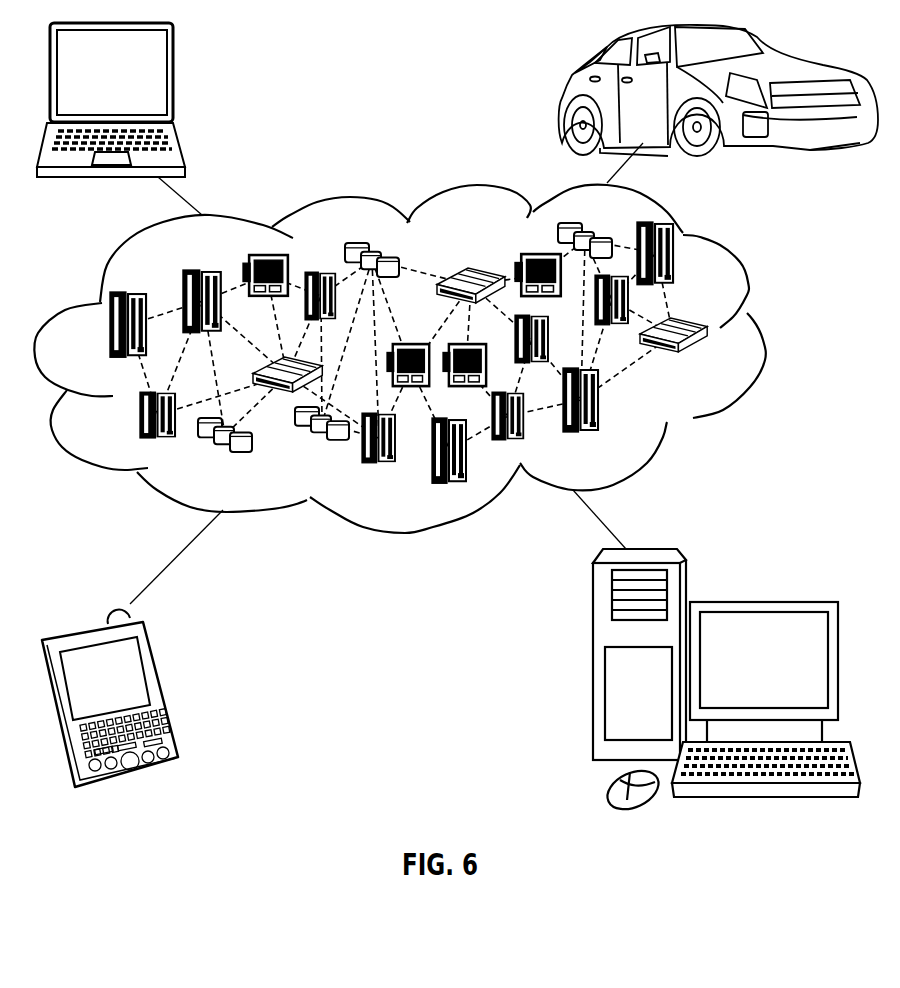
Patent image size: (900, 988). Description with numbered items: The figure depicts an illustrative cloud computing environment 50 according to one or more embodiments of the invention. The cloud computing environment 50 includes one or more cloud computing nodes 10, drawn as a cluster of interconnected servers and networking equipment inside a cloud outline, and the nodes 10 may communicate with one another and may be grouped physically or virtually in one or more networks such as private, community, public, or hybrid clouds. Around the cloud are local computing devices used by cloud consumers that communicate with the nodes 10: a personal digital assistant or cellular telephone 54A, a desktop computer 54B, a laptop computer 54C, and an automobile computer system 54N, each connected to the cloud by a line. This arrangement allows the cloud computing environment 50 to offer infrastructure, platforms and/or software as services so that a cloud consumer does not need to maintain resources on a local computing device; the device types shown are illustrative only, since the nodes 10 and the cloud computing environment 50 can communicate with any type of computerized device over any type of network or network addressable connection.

The cloud computing nodes 10 is at (722, 366).
The cloud computing environment 50 is at (767, 333).
The personal digital assistant or cellular telephone 54A is at (163, 687).
The desktop computer 54B is at (763, 600).
The laptop computer 54C is at (173, 80).
The automobile computer system 54N is at (567, 97).